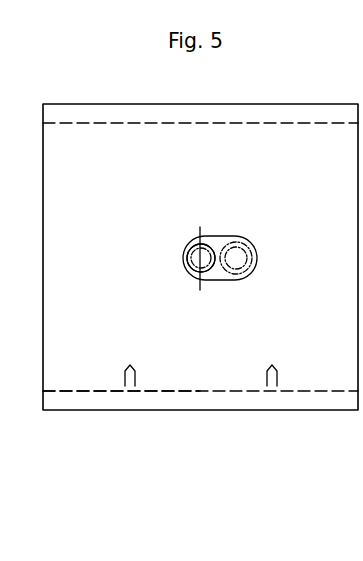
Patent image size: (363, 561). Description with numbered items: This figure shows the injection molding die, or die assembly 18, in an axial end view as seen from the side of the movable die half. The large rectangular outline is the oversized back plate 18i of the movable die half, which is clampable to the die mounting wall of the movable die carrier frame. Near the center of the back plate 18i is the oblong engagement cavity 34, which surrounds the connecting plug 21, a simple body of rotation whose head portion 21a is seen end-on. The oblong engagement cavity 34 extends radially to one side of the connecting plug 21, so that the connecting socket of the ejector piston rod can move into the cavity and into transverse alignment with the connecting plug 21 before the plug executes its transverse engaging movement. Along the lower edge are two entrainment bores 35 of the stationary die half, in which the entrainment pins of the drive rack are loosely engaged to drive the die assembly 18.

The die assembly 18 is at (311, 410).
The back plate 18i is at (107, 372).
The connecting plug 21 is at (186, 249).
The head portion 21a is at (200, 258).
The oblong engagement cavity 34 is at (221, 243).
The entrainment bores 35 is at (267, 388).